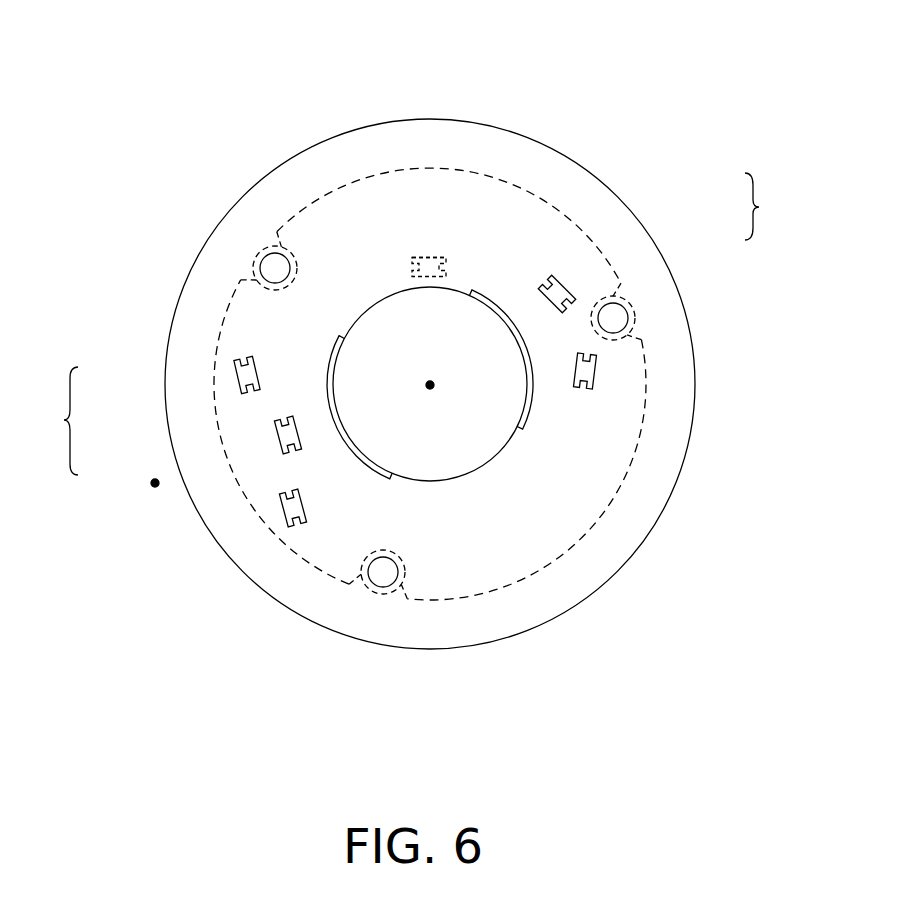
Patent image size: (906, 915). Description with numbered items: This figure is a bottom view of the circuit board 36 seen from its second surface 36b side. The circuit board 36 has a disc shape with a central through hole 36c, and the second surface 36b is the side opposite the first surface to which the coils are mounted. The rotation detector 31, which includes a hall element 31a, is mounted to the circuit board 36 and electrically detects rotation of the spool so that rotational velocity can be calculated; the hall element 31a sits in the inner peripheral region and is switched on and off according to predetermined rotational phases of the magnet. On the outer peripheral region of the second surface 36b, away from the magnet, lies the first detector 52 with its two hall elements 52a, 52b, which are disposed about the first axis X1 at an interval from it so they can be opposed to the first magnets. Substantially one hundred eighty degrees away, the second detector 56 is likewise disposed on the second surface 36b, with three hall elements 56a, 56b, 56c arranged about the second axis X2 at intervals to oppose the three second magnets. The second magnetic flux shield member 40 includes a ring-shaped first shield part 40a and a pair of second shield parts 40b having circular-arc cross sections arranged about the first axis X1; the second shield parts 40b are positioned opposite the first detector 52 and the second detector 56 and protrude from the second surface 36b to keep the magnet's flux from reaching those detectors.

The circuit board 36 is at (642, 582).
The second surface 36b is at (615, 522).
The through hole 36c is at (370, 310).
The second magnetic flux shield member 40 is at (282, 167).
The first shield part 40a is at (535, 192).
The second shield parts 40b is at (483, 305).
The rotation detector 31 is at (420, 256).
The hall element 31a is at (442, 256).
The first detector 52 is at (776, 206).
The hall element 52a is at (567, 282).
The hall element 52b is at (592, 357).
The second detector 56 is at (50, 421).
The hall element 56a is at (236, 372).
The hall element 56b is at (277, 441).
The hall element 56c is at (284, 514).
The first axis X1 is at (430, 385).
The second axis X2 is at (155, 483).